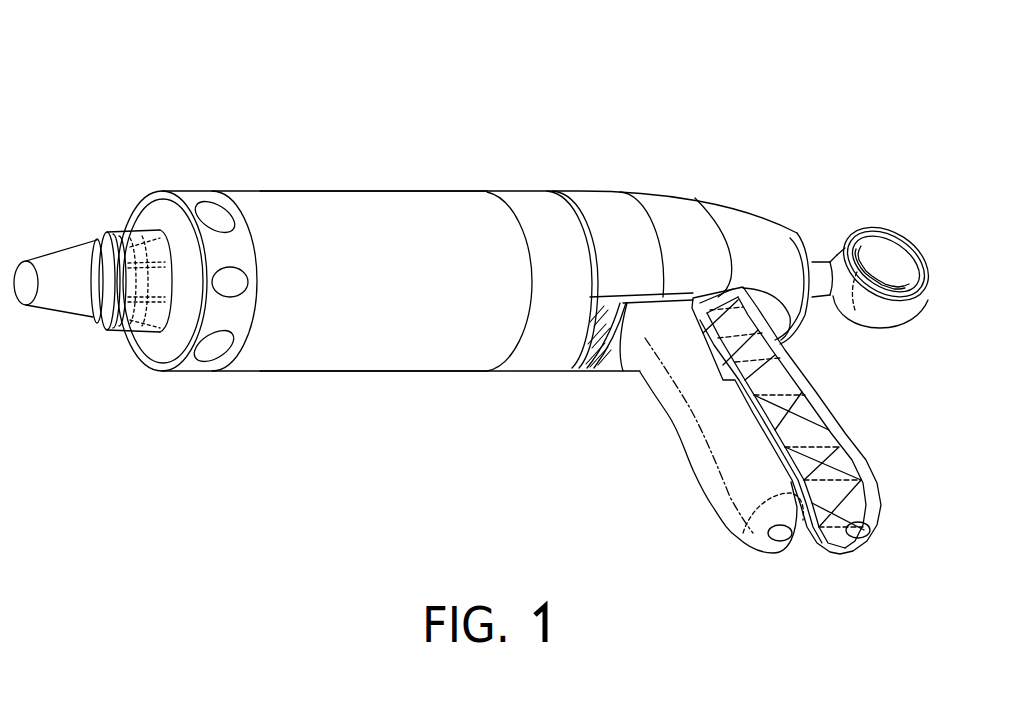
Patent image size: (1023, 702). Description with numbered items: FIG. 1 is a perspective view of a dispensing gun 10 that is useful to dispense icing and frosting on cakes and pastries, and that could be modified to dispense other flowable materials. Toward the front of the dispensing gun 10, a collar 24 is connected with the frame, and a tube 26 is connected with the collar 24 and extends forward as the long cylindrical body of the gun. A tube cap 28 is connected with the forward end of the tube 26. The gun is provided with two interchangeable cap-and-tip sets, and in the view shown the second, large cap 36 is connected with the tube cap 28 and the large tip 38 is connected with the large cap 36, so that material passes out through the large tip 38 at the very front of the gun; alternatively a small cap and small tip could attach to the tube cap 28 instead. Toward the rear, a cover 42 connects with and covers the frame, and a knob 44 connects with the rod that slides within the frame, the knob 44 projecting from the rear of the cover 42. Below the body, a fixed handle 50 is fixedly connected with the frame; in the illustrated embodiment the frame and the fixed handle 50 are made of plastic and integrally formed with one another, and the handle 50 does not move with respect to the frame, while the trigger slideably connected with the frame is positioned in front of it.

The dispensing gun 10 is at (667, 87).
The collar 24 is at (533, 360).
The tube 26 is at (375, 358).
The tube cap 28 is at (173, 371).
The large cap 36 is at (114, 333).
The large tip 38 is at (45, 303).
The cover 42 is at (673, 210).
The knob 44 is at (917, 250).
The fixed handle 50 is at (840, 443).